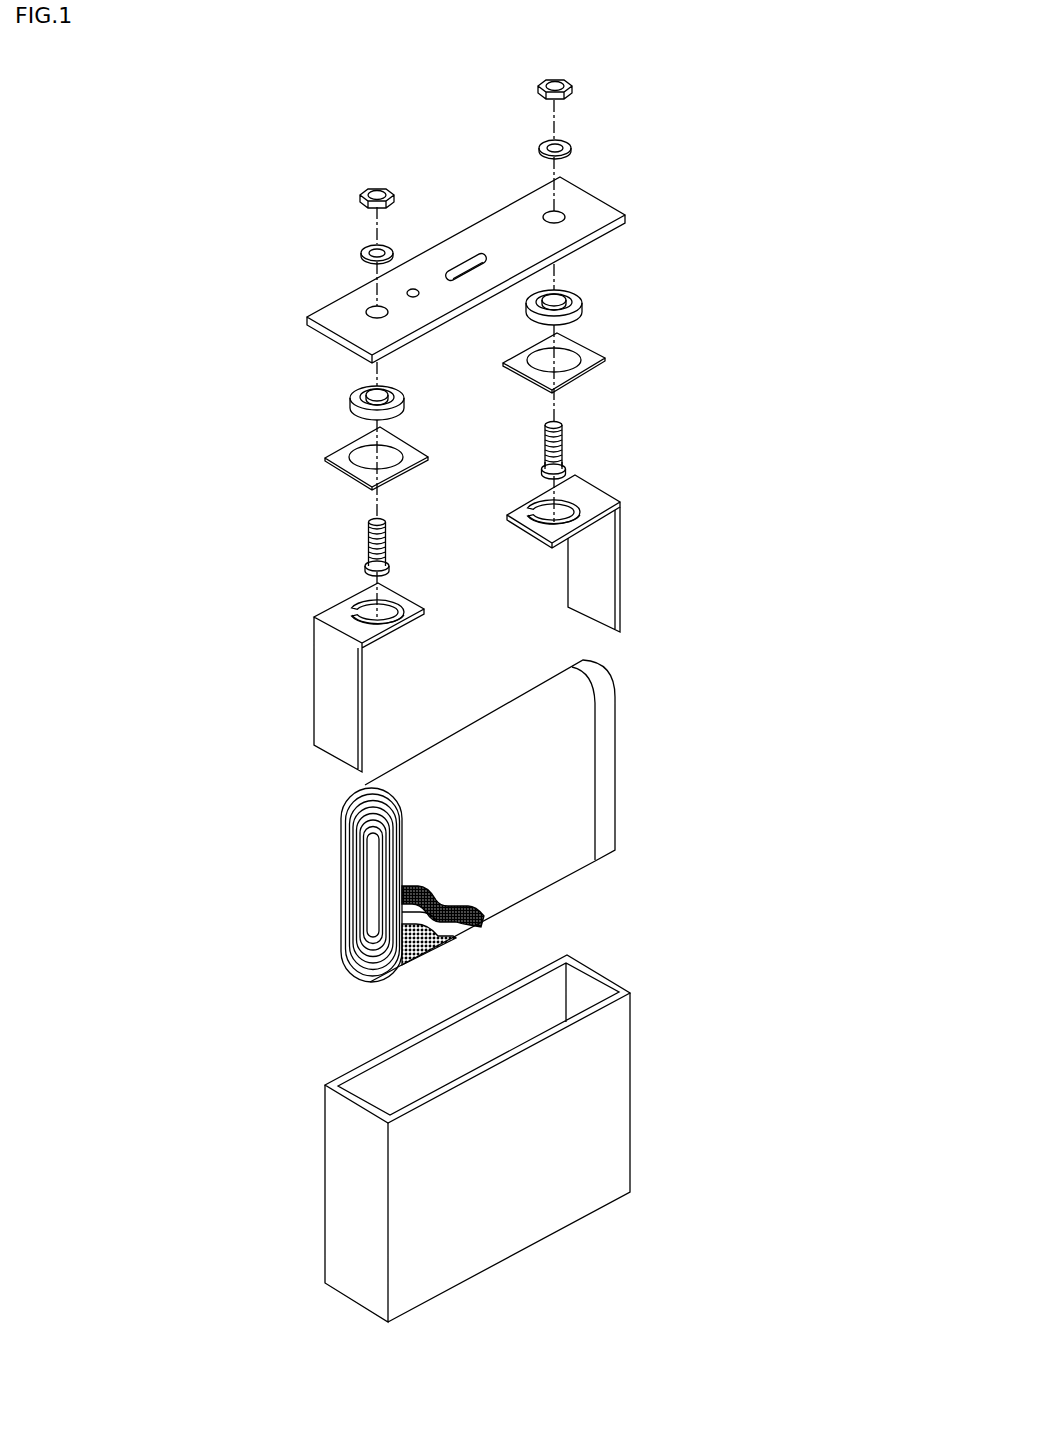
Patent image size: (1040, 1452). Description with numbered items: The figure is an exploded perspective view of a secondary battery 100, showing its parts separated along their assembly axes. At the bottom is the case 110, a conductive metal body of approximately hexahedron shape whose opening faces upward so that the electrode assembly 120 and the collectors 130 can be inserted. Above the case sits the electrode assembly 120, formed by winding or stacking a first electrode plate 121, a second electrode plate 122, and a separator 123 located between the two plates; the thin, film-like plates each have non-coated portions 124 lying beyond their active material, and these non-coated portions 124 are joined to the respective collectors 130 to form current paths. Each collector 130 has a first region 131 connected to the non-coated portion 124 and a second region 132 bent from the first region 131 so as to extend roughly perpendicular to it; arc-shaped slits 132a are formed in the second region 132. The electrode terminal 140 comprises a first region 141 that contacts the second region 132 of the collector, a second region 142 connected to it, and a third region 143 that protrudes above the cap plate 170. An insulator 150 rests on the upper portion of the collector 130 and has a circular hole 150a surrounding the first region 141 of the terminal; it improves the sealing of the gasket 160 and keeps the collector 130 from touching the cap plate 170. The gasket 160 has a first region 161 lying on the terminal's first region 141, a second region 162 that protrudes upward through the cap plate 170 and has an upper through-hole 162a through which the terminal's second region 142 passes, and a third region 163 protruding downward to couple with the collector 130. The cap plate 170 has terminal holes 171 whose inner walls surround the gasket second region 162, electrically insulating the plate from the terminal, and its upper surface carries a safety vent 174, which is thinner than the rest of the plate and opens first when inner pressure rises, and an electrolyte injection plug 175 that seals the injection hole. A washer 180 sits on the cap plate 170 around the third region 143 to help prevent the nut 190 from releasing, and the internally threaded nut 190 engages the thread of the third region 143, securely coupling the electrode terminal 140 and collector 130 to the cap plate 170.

The secondary battery 100 is at (305, 108).
The case 110 is at (630, 1066).
The electrode assembly 120 is at (522, 846).
The first electrode plate 121 is at (415, 952).
The second electrode plate 122 is at (481, 927).
The separator 123 is at (463, 938).
The non-coated portion 124 is at (390, 967).
The collector 130 is at (611, 553).
The first region of the collector 131 is at (618, 572).
The second region of the collector 132 is at (586, 529).
The slit 132a is at (530, 528).
The electrode terminal 140 is at (574, 443).
The first region of the electrode terminal 141 is at (543, 480).
The second region of the electrode terminal 142 is at (543, 469).
The third region of the electrode terminal 143 is at (562, 437).
The insulator 150 is at (599, 341).
The circular hole 150a is at (570, 354).
The gasket 160 is at (361, 420).
The first region of the gasket 161 is at (383, 385).
The second region of the gasket 162 is at (355, 415).
The upper through-hole 162a is at (366, 389).
The third region of the gasket 163 is at (393, 416).
The cap plate 170 is at (501, 256).
The terminal hole 171 is at (549, 211).
The safety vent 174 is at (468, 261).
The electrolyte injection plug 175 is at (420, 294).
The washer 180 is at (571, 149).
The nut 190 is at (571, 92).